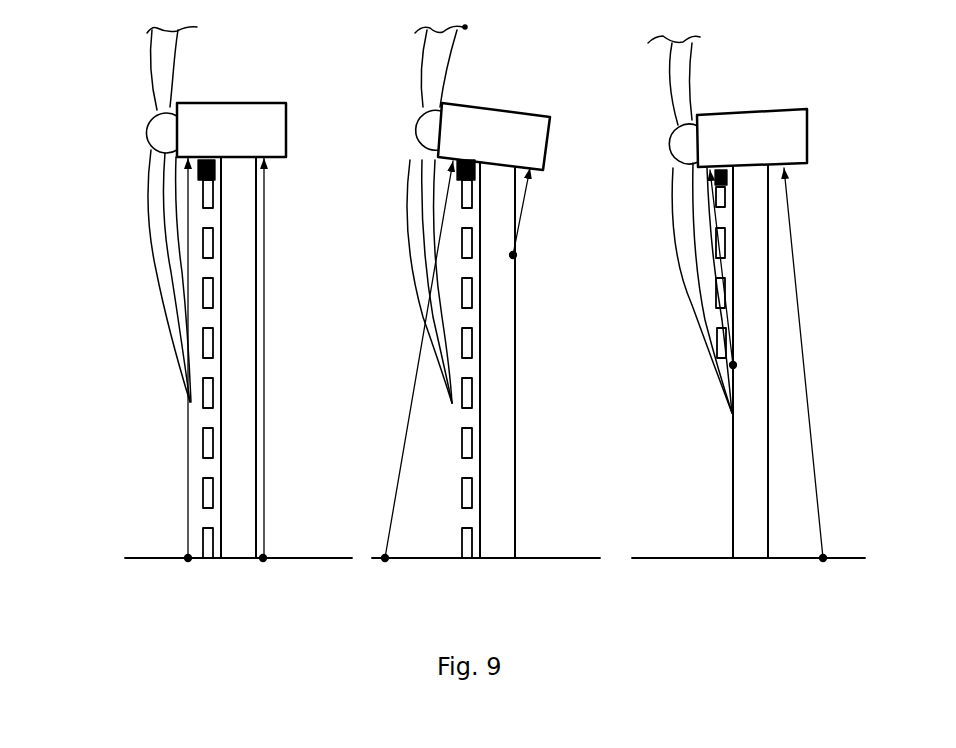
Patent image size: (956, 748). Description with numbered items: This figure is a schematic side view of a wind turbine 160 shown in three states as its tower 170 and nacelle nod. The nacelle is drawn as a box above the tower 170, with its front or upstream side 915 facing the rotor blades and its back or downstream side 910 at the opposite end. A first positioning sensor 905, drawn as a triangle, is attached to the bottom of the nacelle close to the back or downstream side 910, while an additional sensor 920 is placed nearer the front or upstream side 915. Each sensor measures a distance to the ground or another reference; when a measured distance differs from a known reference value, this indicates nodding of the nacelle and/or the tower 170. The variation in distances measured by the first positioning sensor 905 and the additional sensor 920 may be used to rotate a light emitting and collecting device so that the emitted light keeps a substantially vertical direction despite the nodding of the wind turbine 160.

The wind turbine 160 is at (137, 475).
The tower 170 is at (240, 508).
The first positioning sensor 905 is at (267, 162).
The back or downstream side of the nacelle 910 is at (287, 123).
The front or upstream side of the nacelle 915 is at (157, 107).
The additional sensor 920 is at (184, 166).